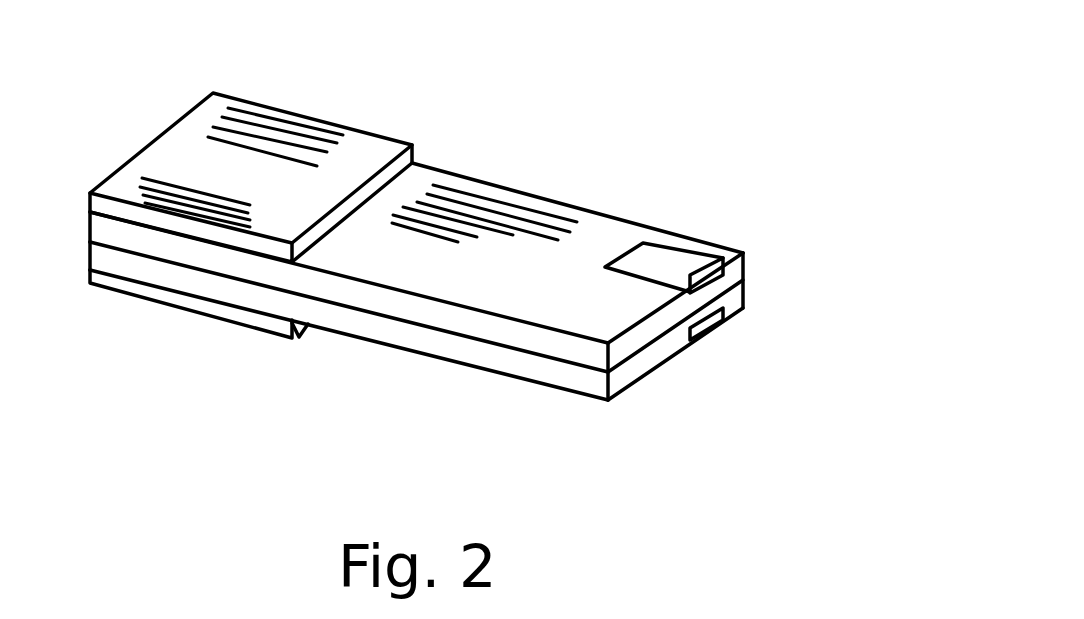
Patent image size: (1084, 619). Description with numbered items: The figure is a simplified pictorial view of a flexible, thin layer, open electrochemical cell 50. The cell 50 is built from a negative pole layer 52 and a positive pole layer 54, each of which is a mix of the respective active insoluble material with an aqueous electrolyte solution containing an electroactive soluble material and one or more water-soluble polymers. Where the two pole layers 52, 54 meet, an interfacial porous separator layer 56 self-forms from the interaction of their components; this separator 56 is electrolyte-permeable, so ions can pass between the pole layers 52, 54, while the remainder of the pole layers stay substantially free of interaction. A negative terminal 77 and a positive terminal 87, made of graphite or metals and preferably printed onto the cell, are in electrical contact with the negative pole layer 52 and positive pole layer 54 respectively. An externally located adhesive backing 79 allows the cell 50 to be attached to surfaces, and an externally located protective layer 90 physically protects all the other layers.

The electrochemical cell 50 is at (680, 183).
The negative pole layer 52 is at (423, 313).
The positive pole layer 54 is at (517, 375).
The interfacial porous separator layer 56 is at (638, 355).
The negative terminal 77 is at (690, 262).
The adhesive backing 79 is at (358, 143).
The positive terminal 87 is at (713, 330).
The protective layer 90 is at (157, 298).